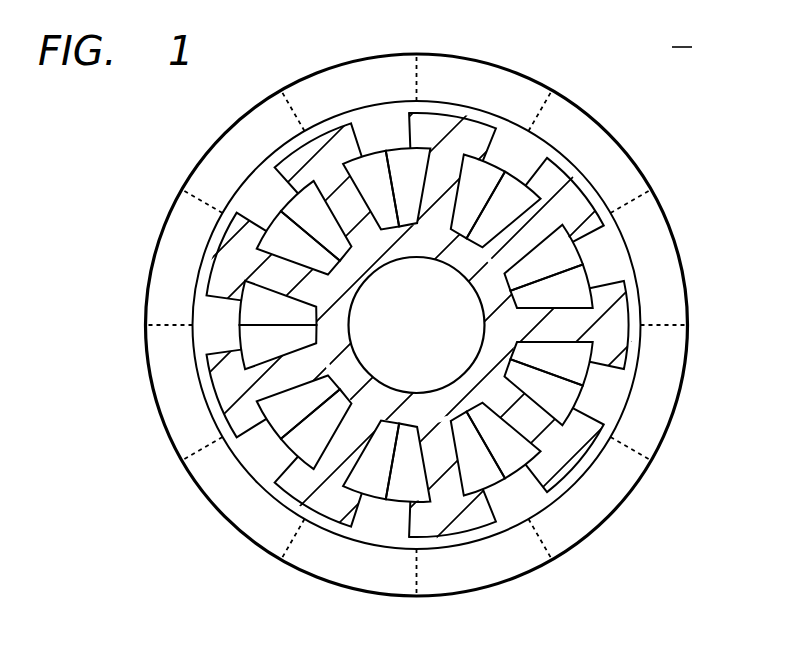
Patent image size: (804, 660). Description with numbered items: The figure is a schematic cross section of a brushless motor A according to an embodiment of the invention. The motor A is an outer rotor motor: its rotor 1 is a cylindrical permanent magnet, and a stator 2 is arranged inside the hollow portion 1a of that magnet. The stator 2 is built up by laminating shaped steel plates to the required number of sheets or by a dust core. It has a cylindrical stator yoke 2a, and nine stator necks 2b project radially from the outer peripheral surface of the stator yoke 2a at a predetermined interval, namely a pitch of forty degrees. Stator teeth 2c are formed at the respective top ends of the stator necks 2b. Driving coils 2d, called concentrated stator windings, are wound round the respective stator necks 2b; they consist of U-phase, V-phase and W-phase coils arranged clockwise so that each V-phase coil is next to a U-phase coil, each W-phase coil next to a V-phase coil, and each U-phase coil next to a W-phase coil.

The brushless motor A is at (682, 36).
The rotor 1 is at (627, 149).
The hollow portion 1a is at (510, 137).
The stator 2 is at (402, 303).
The stator yoke 2a is at (583, 380).
The stator neck 2b is at (593, 300).
The stator tooth 2c is at (630, 330).
The driving coil 2d is at (517, 168).